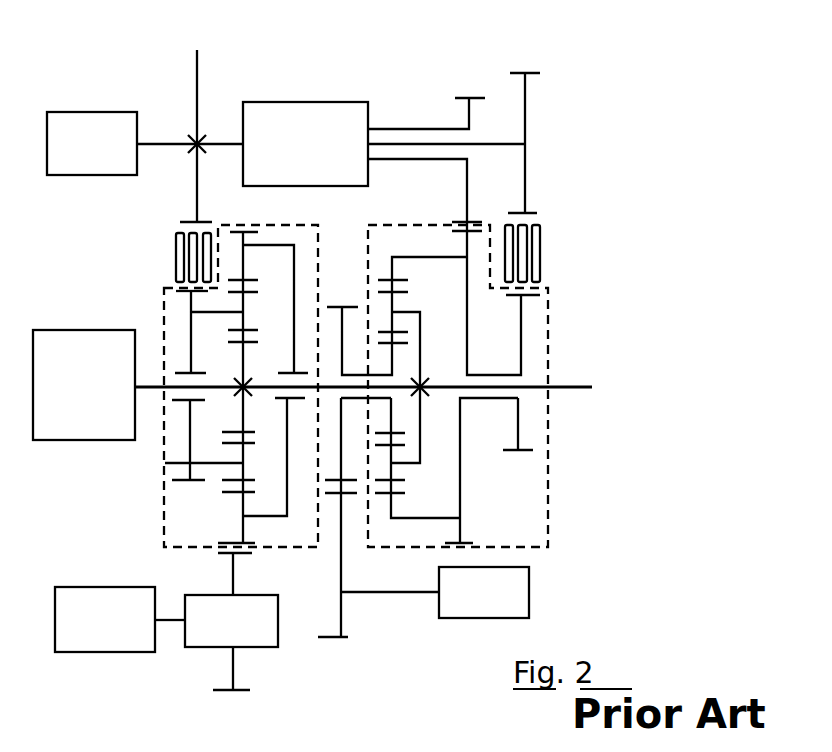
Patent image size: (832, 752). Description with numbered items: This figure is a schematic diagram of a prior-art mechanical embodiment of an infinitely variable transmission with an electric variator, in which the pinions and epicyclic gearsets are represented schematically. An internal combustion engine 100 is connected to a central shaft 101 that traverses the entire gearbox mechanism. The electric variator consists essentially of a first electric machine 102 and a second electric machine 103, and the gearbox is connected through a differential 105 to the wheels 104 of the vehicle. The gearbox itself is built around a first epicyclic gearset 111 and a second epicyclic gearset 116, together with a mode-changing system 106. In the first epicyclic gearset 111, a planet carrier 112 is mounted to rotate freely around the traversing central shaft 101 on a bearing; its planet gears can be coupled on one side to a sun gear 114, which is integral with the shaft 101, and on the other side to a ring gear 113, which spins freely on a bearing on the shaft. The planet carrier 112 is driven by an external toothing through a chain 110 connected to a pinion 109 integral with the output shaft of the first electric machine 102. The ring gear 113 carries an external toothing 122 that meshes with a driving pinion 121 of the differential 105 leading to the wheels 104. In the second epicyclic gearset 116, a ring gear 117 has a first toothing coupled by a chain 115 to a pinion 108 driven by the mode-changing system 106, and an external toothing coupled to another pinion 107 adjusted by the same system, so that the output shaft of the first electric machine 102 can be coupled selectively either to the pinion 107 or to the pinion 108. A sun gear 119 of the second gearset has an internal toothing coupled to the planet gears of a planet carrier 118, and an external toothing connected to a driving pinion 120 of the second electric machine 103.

The internal combustion engine 100 is at (84, 385).
The central shaft 101 is at (573, 387).
The first electric machine 102 is at (92, 143).
The second electric machine 103 is at (435, 592).
The wheels 104 is at (120, 619).
The differential 105 is at (231, 621).
The mode-changing system 106 is at (305, 144).
The pinion 107 is at (466, 98).
The pinion 108 is at (538, 73).
The pinion 109 is at (197, 50).
The chain 110 is at (178, 250).
The first epicyclic gearset 111 is at (157, 518).
The planet carrier 112 is at (170, 463).
The ring gear 113 is at (287, 497).
The sun gear 114 is at (247, 366).
The chain 115 is at (541, 250).
The second epicyclic gearset 116 is at (515, 527).
The ring gear 117 is at (519, 418).
The planet carrier 118 is at (418, 448).
The sun gear 119 is at (343, 305).
The driving pinion 120 is at (336, 625).
The driving pinion 121 is at (233, 690).
The external toothing 122 is at (258, 553).